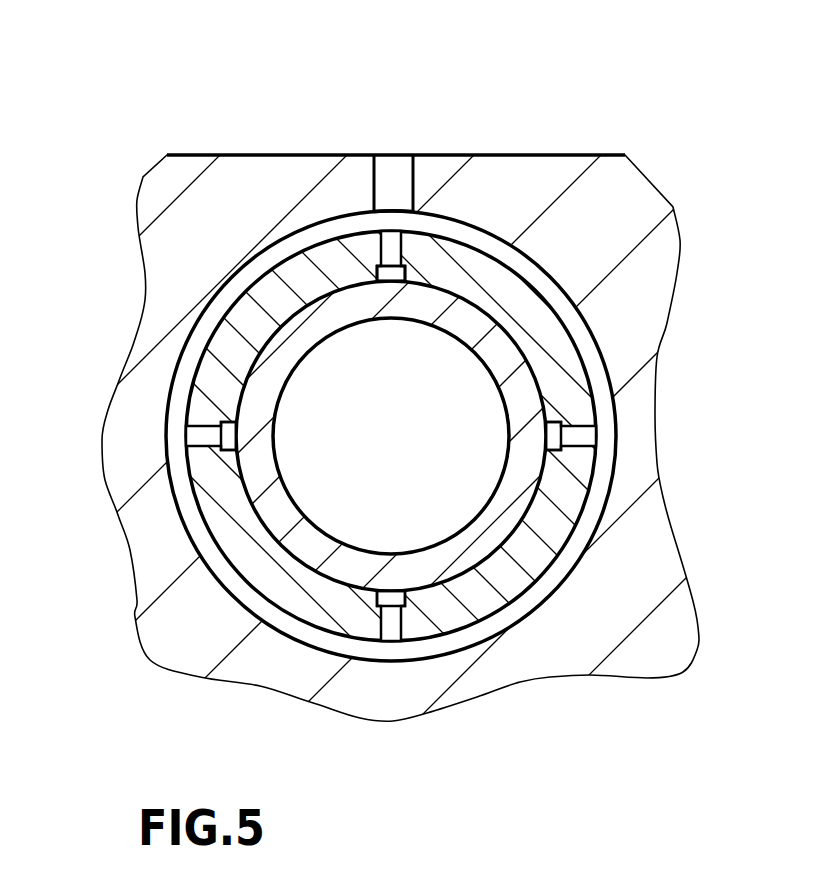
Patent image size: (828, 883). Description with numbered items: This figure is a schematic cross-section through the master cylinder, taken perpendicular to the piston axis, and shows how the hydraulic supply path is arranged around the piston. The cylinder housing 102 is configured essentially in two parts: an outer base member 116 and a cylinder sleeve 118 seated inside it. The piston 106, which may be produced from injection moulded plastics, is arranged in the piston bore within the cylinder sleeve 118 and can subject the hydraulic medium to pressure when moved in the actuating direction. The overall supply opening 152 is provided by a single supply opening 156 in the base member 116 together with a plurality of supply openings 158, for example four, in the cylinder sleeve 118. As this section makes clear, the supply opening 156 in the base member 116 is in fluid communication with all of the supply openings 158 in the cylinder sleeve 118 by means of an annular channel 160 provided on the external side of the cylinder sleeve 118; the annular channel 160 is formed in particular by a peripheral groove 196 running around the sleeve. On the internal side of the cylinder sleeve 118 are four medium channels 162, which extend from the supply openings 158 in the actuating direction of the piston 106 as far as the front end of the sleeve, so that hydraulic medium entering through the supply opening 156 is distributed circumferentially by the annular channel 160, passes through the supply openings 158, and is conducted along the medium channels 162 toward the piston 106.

The cylinder housing 102 is at (590, 218).
The base member 116 is at (643, 257).
The peripheral groove 196 is at (505, 247).
The cylinder sleeve 118 is at (540, 323).
The piston 106 is at (520, 390).
The supply opening 152 is at (385, 173).
The supply opening 156 is at (393, 193).
The supply openings 158 is at (390, 250).
The medium channels 162 is at (343, 228).
The annular channel 160 is at (393, 275).